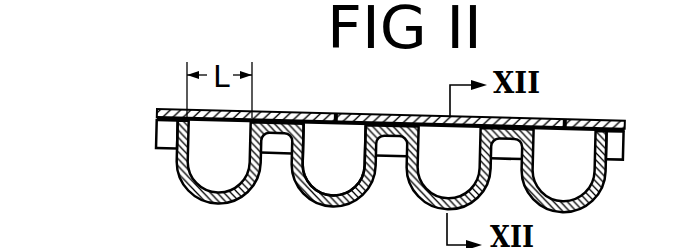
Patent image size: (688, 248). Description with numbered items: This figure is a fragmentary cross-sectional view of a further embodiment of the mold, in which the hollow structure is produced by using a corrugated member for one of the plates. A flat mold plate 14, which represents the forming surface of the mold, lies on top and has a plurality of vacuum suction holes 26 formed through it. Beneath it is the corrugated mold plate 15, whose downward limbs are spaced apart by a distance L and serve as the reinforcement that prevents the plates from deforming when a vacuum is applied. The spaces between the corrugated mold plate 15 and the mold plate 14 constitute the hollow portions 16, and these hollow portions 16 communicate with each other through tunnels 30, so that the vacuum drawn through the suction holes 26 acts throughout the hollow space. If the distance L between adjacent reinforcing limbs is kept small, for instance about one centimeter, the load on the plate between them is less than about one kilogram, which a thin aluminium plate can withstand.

The mold plate 14 is at (300, 108).
The corrugated mold plate 15 is at (306, 187).
The hollow portions 16 is at (210, 162).
The vacuum suction holes 26 is at (337, 117).
The tunnels 30 is at (273, 155).